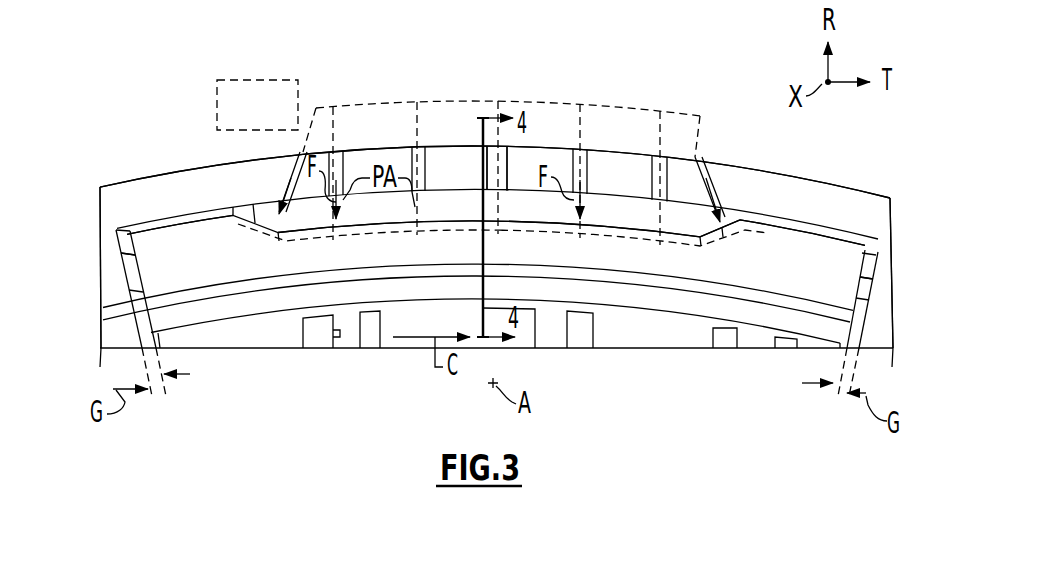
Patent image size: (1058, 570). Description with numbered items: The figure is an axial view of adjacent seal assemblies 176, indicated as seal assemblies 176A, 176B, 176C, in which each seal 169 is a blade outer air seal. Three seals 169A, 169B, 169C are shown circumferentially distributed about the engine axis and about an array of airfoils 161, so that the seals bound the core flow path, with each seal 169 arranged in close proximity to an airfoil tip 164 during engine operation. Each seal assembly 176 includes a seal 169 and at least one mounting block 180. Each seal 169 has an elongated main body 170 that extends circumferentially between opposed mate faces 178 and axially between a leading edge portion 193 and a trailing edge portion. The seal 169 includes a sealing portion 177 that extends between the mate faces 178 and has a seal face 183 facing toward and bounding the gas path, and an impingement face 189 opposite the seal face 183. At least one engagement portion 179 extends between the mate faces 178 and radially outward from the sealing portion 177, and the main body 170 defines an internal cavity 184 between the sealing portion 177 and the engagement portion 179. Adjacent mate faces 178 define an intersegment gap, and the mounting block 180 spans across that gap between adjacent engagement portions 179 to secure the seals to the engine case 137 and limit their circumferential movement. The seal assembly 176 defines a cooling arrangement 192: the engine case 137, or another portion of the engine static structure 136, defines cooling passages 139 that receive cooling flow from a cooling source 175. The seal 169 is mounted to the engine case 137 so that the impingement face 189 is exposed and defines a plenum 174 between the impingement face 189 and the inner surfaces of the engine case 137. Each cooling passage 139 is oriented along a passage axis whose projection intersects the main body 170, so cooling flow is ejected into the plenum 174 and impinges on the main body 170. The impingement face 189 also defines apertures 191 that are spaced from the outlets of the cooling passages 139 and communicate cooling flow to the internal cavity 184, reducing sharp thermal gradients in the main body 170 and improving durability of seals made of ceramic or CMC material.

The engine static structure 136 is at (498, 160).
The engine case 137 is at (802, 185).
The cooling passages 139 is at (350, 170).
The airfoils 161 is at (333, 330).
The airfoil tip 164 is at (304, 318).
The seal 169 is at (496, 189).
The seal 169A is at (258, 222).
The seal 169B is at (117, 352).
The seal 169C is at (878, 293).
The main body 170 is at (726, 230).
The plenum 174 is at (553, 217).
The cooling source 175 is at (316, 109).
The seal assembly 176 is at (138, 157).
The seal assembly 176A is at (170, 226).
The seal assembly 176B is at (112, 236).
The seal assembly 176C is at (892, 244).
The sealing portion 177 is at (727, 308).
The mate faces 178 is at (110, 263).
The engagement portion 179 is at (198, 247).
The mounting block 180 is at (140, 227).
The seal face 183 is at (793, 343).
The internal cavity 184 is at (450, 237).
The impingement face 189 is at (683, 225).
The apertures 191 is at (282, 235).
The cooling arrangement 192 is at (693, 101).
The leading edge portion 193 is at (590, 290).